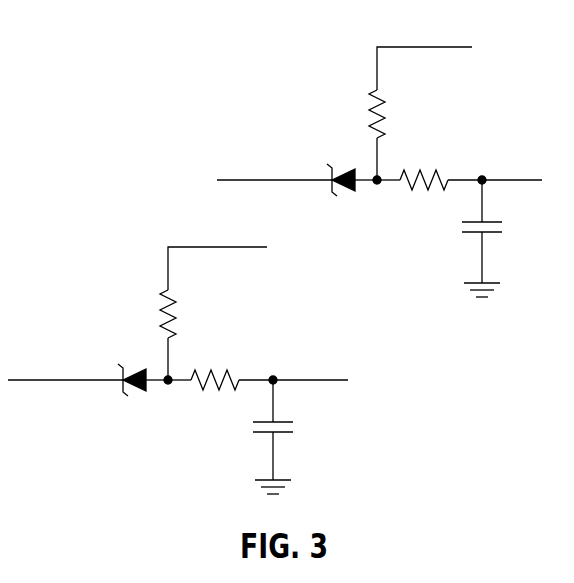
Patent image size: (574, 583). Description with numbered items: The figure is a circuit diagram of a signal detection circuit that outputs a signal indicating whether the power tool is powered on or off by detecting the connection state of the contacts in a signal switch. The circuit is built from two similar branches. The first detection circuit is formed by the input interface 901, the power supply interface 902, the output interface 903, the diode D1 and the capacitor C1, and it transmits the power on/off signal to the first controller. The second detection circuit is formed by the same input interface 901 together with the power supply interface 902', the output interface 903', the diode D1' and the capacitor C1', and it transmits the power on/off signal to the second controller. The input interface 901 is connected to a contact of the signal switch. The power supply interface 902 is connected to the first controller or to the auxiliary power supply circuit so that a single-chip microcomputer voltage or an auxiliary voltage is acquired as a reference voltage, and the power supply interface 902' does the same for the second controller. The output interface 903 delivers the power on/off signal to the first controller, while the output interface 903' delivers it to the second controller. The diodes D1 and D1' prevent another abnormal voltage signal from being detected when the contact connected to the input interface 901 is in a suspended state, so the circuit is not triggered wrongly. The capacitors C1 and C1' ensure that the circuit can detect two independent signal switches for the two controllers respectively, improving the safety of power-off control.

The input interface 901 is at (170, 259).
The power supply interface 902 is at (420, 95).
The output interface 903 is at (459, 164).
The power supply interface 902' is at (213, 295).
The output interface 903' is at (258, 362).
The diode D1 is at (352, 198).
The capacitor C1 is at (508, 238).
The diode D1' is at (146, 398).
The capacitor C1' is at (301, 437).